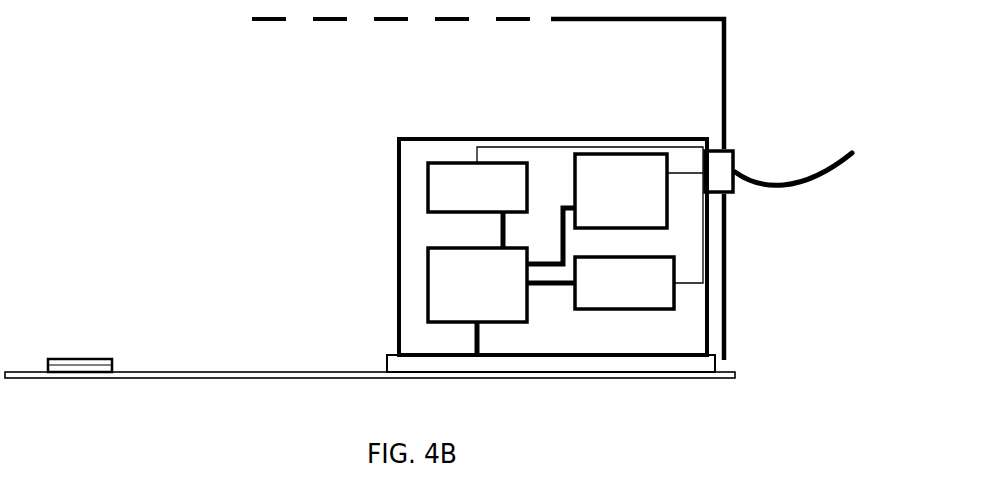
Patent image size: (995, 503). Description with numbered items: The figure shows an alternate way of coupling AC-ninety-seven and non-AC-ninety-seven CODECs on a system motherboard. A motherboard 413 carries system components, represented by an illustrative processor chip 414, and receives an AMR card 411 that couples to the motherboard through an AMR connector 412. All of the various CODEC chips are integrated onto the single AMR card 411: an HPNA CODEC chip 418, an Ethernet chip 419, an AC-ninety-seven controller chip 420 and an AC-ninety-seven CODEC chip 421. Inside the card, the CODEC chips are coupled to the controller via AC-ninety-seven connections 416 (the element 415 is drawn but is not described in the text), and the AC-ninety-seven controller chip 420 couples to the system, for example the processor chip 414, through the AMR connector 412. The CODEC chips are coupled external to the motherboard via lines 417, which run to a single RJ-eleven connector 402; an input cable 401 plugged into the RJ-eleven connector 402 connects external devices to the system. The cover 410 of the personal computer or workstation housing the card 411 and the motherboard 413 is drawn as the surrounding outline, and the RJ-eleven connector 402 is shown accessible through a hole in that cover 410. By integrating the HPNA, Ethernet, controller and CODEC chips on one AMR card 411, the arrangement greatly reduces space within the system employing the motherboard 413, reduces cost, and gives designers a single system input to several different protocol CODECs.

The cable 401 is at (803, 193).
The RJ11 connector 402 is at (732, 153).
The cover 410 is at (735, 51).
The AMR card 411 is at (398, 138).
The AMR connector 412 is at (380, 360).
The motherboard 413 is at (170, 371).
The processor chip 414 is at (63, 359).
The HPNA connector 415 is at (500, 243).
The AC-97 connections 416 is at (487, 338).
The lines 417 is at (690, 163).
The HPNA CODEC chip 418 is at (447, 163).
The Ethernet chip 419 is at (588, 166).
The AC-97 controller chip 420 is at (433, 300).
The AC-97 CODEC chip 421 is at (674, 295).